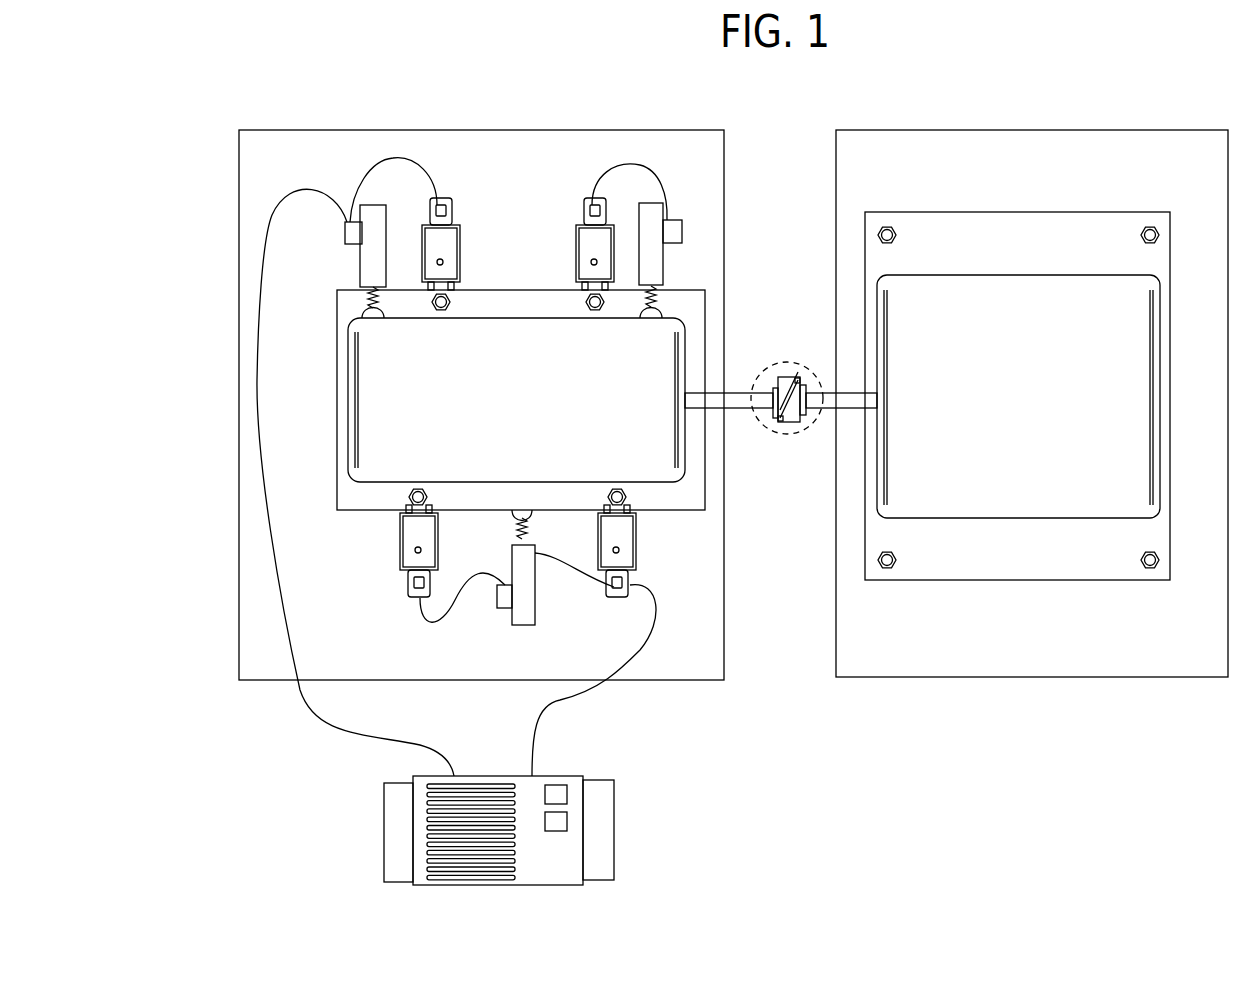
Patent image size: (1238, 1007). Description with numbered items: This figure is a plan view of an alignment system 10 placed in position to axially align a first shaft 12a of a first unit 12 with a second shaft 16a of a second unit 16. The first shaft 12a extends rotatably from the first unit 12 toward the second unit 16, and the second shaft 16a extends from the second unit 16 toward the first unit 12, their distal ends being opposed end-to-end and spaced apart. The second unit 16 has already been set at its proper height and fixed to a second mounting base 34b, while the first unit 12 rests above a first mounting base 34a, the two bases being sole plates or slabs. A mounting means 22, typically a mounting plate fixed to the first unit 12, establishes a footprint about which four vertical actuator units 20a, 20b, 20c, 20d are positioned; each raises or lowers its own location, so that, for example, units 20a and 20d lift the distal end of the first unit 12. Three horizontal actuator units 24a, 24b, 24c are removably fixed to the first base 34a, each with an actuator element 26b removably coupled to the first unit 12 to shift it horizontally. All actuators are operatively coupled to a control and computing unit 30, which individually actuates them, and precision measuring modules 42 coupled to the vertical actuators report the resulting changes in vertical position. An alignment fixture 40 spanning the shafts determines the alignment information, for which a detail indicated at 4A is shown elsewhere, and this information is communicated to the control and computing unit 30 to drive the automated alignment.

The alignment system 10 is at (786, 750).
The first unit 12 is at (380, 460).
The first shaft 12a is at (735, 415).
The second unit 16 is at (1018, 283).
The second shaft 16a is at (826, 396).
The vertical actuator unit 20a is at (455, 248).
The vertical actuator unit 20b is at (582, 243).
The vertical actuator unit 20c is at (636, 535).
The vertical actuator unit 20d is at (398, 553).
The mounting means 22 is at (340, 388).
The horizontal actuator unit 24a is at (362, 258).
The horizontal actuator unit 24b is at (657, 260).
The horizontal actuator unit 24c is at (536, 600).
The actuator element 26b is at (372, 295).
The control and computing unit 30 is at (600, 780).
The first mounting base 34a is at (243, 464).
The second mounting base 34b is at (1062, 620).
The alignment fixture 40 is at (751, 368).
The precision measuring module 42 is at (437, 196).
The detail view indicator 4A is at (803, 434).